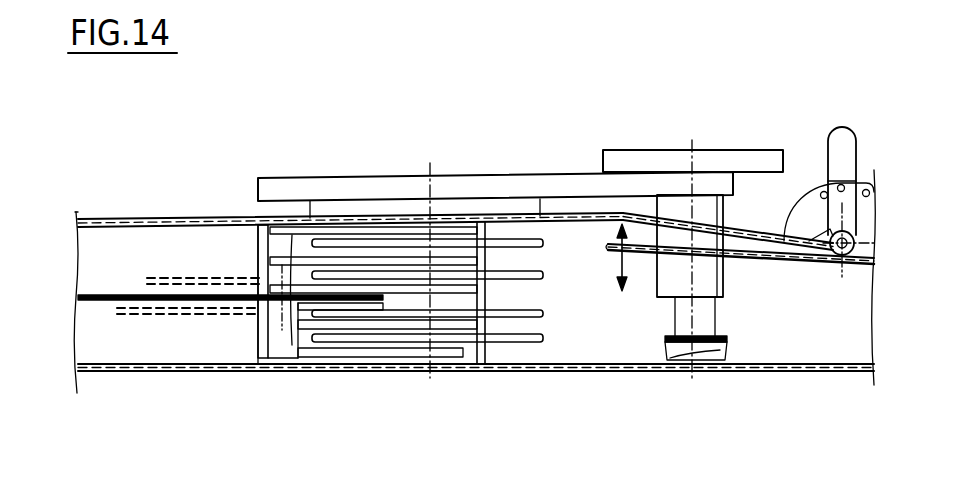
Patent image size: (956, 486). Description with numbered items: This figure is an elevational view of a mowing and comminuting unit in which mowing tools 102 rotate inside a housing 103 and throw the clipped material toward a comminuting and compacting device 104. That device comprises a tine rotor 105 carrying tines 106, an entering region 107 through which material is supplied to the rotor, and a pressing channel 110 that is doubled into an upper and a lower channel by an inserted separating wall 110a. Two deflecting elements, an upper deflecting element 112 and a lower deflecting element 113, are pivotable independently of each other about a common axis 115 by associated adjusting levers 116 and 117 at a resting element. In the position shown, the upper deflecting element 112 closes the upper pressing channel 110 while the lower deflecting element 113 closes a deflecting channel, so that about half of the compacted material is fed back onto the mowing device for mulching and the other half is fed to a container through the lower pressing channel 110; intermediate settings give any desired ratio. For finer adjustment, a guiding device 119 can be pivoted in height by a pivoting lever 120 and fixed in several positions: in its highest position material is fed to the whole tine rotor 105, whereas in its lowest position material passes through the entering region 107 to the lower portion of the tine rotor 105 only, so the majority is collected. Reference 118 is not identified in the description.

The mowing tools 102 is at (694, 380).
The housing 103 is at (667, 221).
The comminuting and compacting device 104 is at (443, 184).
The tine rotor 105 is at (440, 293).
The tines 106 is at (515, 345).
The entering region 107 is at (568, 351).
The pressing channel 110 is at (120, 291).
The separating wall 110a is at (100, 333).
The upper deflecting element 112 is at (300, 346).
The lower deflecting element 113 is at (365, 373).
The common axis 115 is at (273, 343).
The adjusting lever 116 is at (233, 318).
The adjusting lever 117 is at (147, 318).
The guide strip 118 is at (180, 318).
The guiding device 119 is at (747, 259).
The pivoting lever 120 is at (849, 153).